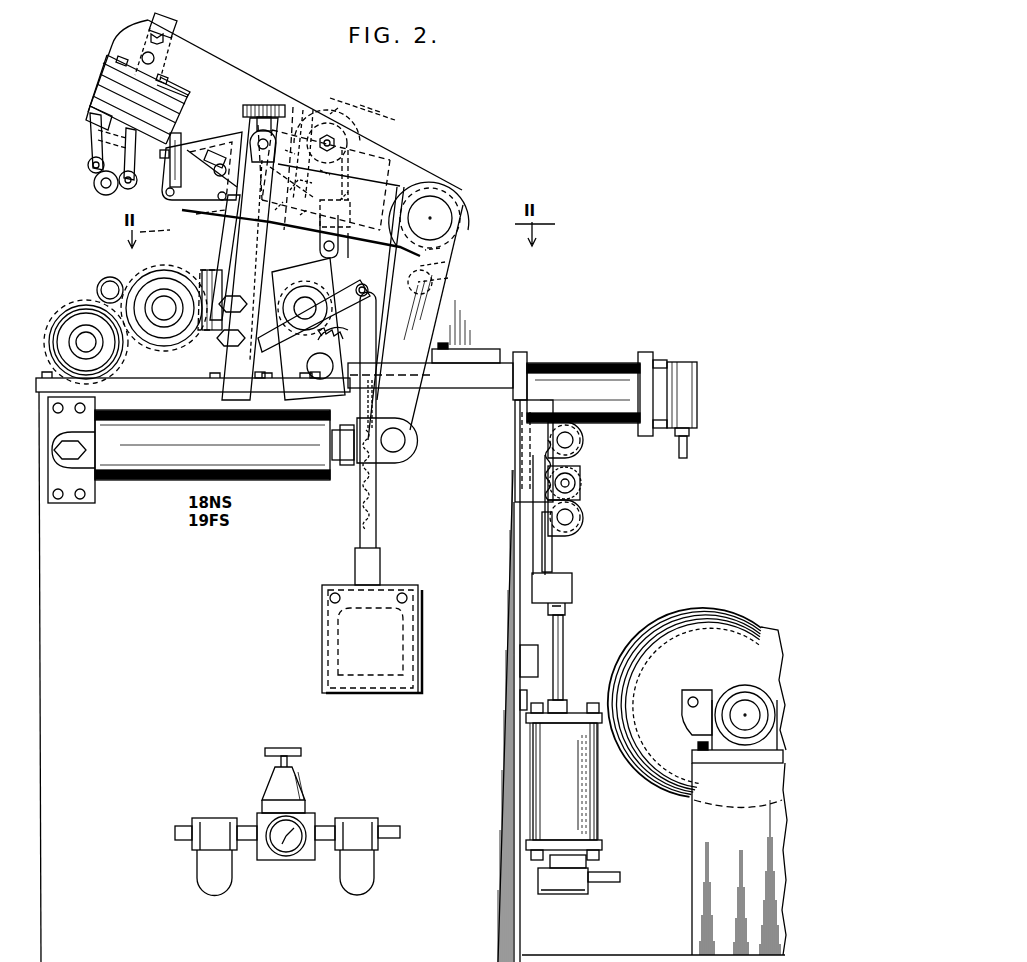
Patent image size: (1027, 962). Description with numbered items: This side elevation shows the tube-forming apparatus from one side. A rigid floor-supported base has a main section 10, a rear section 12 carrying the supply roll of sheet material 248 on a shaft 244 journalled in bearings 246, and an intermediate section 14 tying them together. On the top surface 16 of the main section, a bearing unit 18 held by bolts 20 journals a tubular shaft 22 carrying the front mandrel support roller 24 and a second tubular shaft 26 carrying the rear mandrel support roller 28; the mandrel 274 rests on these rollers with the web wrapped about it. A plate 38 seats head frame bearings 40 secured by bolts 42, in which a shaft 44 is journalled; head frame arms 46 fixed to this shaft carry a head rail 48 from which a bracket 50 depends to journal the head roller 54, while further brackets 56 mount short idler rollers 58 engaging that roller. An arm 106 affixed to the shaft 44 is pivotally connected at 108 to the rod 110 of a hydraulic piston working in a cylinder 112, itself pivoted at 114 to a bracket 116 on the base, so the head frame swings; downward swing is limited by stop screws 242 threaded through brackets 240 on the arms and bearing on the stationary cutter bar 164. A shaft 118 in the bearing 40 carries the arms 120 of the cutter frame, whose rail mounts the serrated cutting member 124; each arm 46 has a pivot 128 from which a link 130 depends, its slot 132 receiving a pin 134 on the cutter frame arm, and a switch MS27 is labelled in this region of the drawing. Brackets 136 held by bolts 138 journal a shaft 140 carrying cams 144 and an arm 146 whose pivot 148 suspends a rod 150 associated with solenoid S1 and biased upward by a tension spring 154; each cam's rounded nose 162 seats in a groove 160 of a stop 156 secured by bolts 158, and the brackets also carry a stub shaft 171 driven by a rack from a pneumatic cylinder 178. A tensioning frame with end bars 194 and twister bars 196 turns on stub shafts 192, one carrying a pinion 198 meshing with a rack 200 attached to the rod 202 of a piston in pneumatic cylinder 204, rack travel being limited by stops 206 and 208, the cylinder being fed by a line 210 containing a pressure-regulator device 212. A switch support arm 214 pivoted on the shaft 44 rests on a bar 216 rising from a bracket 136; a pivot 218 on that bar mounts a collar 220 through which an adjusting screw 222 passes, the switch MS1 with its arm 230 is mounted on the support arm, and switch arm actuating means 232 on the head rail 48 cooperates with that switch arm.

The main section 10 is at (190, 696).
The rear base section 12 is at (748, 838).
The intermediate section 14 is at (628, 955).
The top surface 16 is at (455, 388).
The bearing unit 18 is at (84, 305).
The bolts 20 is at (45, 378).
The tubular shaft 22 is at (82, 342).
The front mandrel support roller 24 is at (76, 310).
The second tubular shaft 26 is at (160, 306).
The rear mandrel support roller 28 is at (172, 282).
The plate 38 is at (512, 362).
The head frame bearing 40 is at (472, 306).
The bolts 42 is at (478, 349).
The shaft 44 is at (440, 215).
The head frame arm 46 is at (235, 72).
The head rail 48 is at (110, 82).
The bracket 50 is at (105, 138).
The head roller 54 is at (98, 192).
The bracket 56 is at (90, 117).
The short idler roller 58 is at (88, 170).
The arm 106 is at (445, 262).
The pivot 108 is at (395, 446).
The rod 110 is at (344, 466).
The cylinder 112 is at (216, 448).
The pivot 114 is at (62, 450).
The bracket 116 is at (68, 503).
The shaft 118 is at (470, 272).
The cutter frame arm 120 is at (475, 236).
The serrated cutting member 124 is at (169, 237).
The pivot 128 is at (342, 135).
The link 130 is at (368, 138).
The slot 132 is at (340, 198).
The pin 134 is at (338, 246).
The bracket 136 is at (288, 342).
The bolts 138 is at (316, 370).
The shaft 140 is at (305, 318).
The cam 144 is at (302, 272).
The arm 146 is at (348, 302).
The pivot 148 is at (362, 283).
The rod 150 is at (378, 516).
The tension spring 154 is at (362, 505).
The stop 156 is at (306, 115).
The bolts 158 is at (347, 103).
The groove 160 is at (320, 198).
The rounded nose 162 is at (262, 248).
The stationary cutter bar 164 is at (216, 272).
The stub shaft 171 is at (324, 376).
The cylinder 178 is at (612, 372).
The stub shaft 192 is at (576, 483).
The end bar 194 is at (582, 457).
The twister bar 196 is at (572, 440).
The pinion 198 is at (580, 500).
The rack 200 is at (538, 528).
The rod 202 is at (566, 652).
The pneumatic cylinder 204 is at (580, 800).
The stop 206 is at (556, 544).
The stop 208 is at (520, 674).
The line 210 is at (610, 884).
The pressure-regulator device 212 is at (300, 796).
The switch support arm 214 is at (203, 167).
The bar 216 is at (240, 250).
The pivot 218 is at (293, 107).
The collar 220 is at (214, 194).
The adjusting screw 222 is at (277, 140).
The switch arm 230 is at (165, 150).
The switch arm actuating means 232 is at (192, 57).
The bracket 240 is at (246, 135).
The stop screw 242 is at (196, 216).
The shaft 244 is at (746, 722).
The bearing 246 is at (740, 690).
The supply roll 248 is at (650, 710).
The mandrel 274 is at (110, 280).
The switch MS1 is at (172, 140).
The microswitch MS27 is at (380, 123).
The solenoid S1 is at (335, 630).